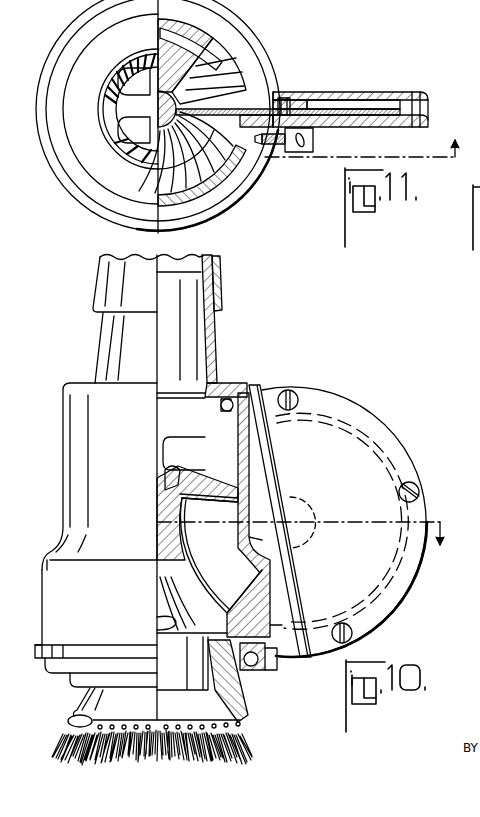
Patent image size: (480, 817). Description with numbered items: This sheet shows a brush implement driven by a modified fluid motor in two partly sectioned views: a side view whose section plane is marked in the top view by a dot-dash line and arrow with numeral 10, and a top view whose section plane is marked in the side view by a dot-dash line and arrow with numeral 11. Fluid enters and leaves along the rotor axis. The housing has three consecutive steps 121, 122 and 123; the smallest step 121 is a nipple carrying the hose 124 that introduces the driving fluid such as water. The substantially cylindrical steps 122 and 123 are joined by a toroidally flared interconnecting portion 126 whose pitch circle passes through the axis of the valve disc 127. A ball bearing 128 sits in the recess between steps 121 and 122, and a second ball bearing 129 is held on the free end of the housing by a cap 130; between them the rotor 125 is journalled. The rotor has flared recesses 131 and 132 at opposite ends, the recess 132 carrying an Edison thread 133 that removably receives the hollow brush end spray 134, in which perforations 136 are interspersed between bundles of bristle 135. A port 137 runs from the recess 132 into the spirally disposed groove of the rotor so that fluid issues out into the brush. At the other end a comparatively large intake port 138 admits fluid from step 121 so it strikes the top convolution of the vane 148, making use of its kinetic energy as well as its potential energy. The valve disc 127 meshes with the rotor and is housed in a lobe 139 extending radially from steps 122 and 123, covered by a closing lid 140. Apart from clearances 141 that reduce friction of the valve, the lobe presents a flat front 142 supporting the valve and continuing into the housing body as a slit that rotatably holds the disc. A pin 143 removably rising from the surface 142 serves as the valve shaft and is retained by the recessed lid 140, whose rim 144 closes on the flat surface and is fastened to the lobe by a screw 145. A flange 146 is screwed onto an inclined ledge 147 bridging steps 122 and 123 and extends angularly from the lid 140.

In FIG. 11, the section line 10 is at (464, 143).
In FIG. 10, the section line 11 is at (449, 536).
In FIG. 10, the smallest step 121 is at (102, 345).
In FIG. 11, the second step 122 is at (85, 170).
In FIG. 10, the second step 122 is at (99, 476).
In FIG. 11, the third step 123 is at (86, 208).
In FIG. 10, the third step 123 is at (96, 623).
In FIG. 11, the hose 124 is at (130, 109).
In FIG. 10, the hose 124 is at (98, 282).
In FIG. 11, the rotor 125 is at (166, 124).
In FIG. 10, the rotor 125 is at (140, 540).
In FIG. 10, the toroidally flared interconnecting portion 126 is at (209, 555).
In FIG. 11, the valve disc 127 is at (230, 132).
In FIG. 10, the valve disc 127 is at (404, 435).
In FIG. 10, the ball bearing 128 is at (241, 392).
In FIG. 10, the ball bearing 129 is at (255, 672).
In FIG. 11, the cap 130 is at (100, 222).
In FIG. 10, the cap 130 is at (280, 667).
In FIG. 10, the flared recess 131 is at (163, 471).
In FIG. 10, the flared recess 132 is at (160, 603).
In FIG. 10, the Edison thread 133 is at (243, 712).
In FIG. 10, the hollow brush end spray 134 is at (76, 705).
In FIG. 10, the bristle bundles 135 is at (187, 766).
In FIG. 10, the perforations 136 is at (68, 725).
In FIG. 10, the port 137 is at (158, 625).
In FIG. 11, the intake port 138 is at (134, 105).
In FIG. 10, the intake port 138 is at (184, 453).
In FIG. 11, the lobe 139 is at (378, 92).
In FIG. 11, the closing lid 140 is at (428, 127).
In FIG. 10, the closing lid 140 is at (351, 522).
In FIG. 11, the clearances 141 is at (335, 92).
In FIG. 10, the clearances 141 is at (378, 421).
In FIG. 11, the flat front surface 142 is at (415, 92).
In FIG. 11, the pin 143 is at (287, 97).
In FIG. 11, the rim 144 is at (432, 110).
In FIG. 11, the screw 145 is at (295, 152).
In FIG. 10, the screw 145 is at (280, 409).
In FIG. 11, the flange 146 is at (313, 142).
In FIG. 10, the flange 146 is at (258, 386).
In FIG. 11, the inclined ledge 147 is at (272, 180).
In FIG. 10, the inclined ledge 147 is at (273, 579).
In FIG. 11, the vane 148 is at (179, 100).
In FIG. 10, the vane 148 is at (206, 480).